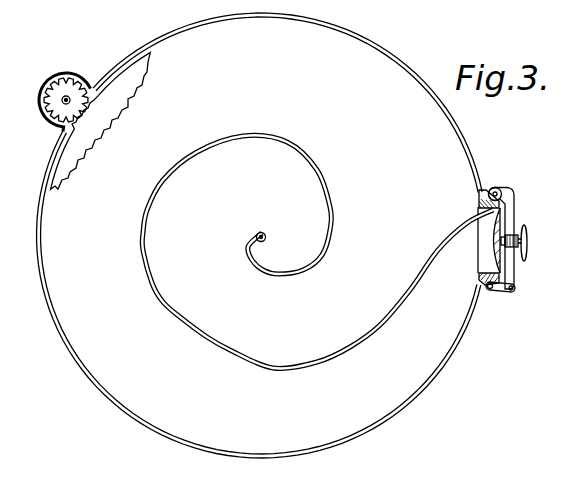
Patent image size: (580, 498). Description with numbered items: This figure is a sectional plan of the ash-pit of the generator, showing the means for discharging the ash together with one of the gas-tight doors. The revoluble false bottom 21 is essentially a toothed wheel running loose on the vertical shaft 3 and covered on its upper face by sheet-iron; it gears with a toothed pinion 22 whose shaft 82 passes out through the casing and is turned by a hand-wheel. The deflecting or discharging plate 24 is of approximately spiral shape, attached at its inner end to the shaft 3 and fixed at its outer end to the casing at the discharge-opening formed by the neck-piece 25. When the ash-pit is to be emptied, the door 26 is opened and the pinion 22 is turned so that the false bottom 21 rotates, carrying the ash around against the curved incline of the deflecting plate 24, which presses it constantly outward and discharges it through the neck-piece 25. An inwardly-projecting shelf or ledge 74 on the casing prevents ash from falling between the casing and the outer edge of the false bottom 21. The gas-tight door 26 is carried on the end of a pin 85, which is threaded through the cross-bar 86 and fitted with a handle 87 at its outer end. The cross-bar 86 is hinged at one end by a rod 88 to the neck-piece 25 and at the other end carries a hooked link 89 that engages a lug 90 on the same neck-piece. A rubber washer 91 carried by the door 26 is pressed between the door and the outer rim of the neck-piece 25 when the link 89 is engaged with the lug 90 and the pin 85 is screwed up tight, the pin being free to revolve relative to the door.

The vertical shaft 3 is at (266, 237).
The revoluble false bottom 21 is at (123, 385).
The toothed pinion 22 is at (67, 81).
The deflecting or discharging plate 24 is at (153, 287).
The neck-piece 25 is at (488, 263).
The gas-tight removable door 26 is at (511, 222).
The inwardly-projecting shelf or ledge 74 is at (136, 64).
The shaft 82 is at (60, 101).
The pin 85 is at (528, 242).
The cross-bar 86 is at (514, 271).
The handle 87 is at (527, 229).
The rod 88 is at (501, 190).
The hooked link 89 is at (505, 291).
The lug 90 is at (491, 290).
The rubber washer 91 is at (498, 212).